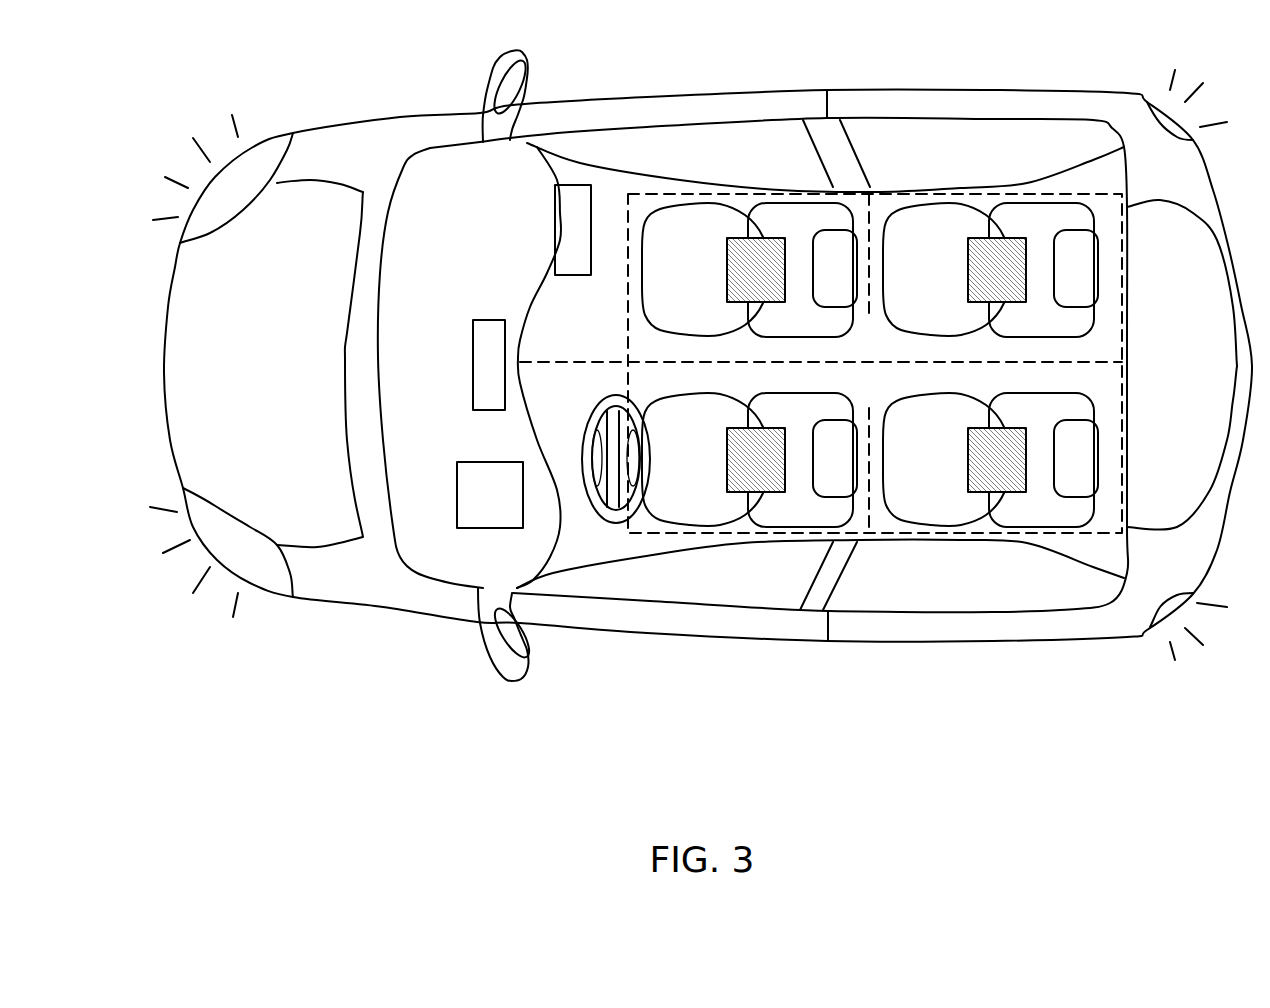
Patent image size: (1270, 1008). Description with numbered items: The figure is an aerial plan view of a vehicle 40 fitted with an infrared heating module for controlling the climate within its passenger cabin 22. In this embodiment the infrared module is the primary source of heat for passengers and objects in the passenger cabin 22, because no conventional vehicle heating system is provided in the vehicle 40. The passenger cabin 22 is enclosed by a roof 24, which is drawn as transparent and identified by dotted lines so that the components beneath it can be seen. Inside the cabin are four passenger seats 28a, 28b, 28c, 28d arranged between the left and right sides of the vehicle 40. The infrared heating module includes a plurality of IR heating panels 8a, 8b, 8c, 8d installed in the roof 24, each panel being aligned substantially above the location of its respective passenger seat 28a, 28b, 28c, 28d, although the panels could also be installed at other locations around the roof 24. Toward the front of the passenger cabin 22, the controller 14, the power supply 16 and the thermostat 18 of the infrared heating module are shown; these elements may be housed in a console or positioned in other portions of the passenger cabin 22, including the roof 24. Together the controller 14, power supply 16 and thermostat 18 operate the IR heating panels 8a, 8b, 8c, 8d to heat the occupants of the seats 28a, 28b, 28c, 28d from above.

The vehicle 40 is at (364, 753).
The passenger cabin 22 is at (413, 155).
The roof 24 is at (898, 192).
The thermostat 18 is at (583, 185).
The controller 14 is at (493, 318).
The power supply 16 is at (490, 495).
The passenger seat 28a is at (749, 270).
The passenger seat 28b is at (990, 270).
The passenger seat 28c is at (990, 460).
The passenger seat 28d is at (749, 460).
The IR heating panel 8a is at (727, 278).
The IR heating panel 8b is at (968, 278).
The IR heating panel 8c is at (968, 468).
The IR heating panel 8d is at (727, 468).